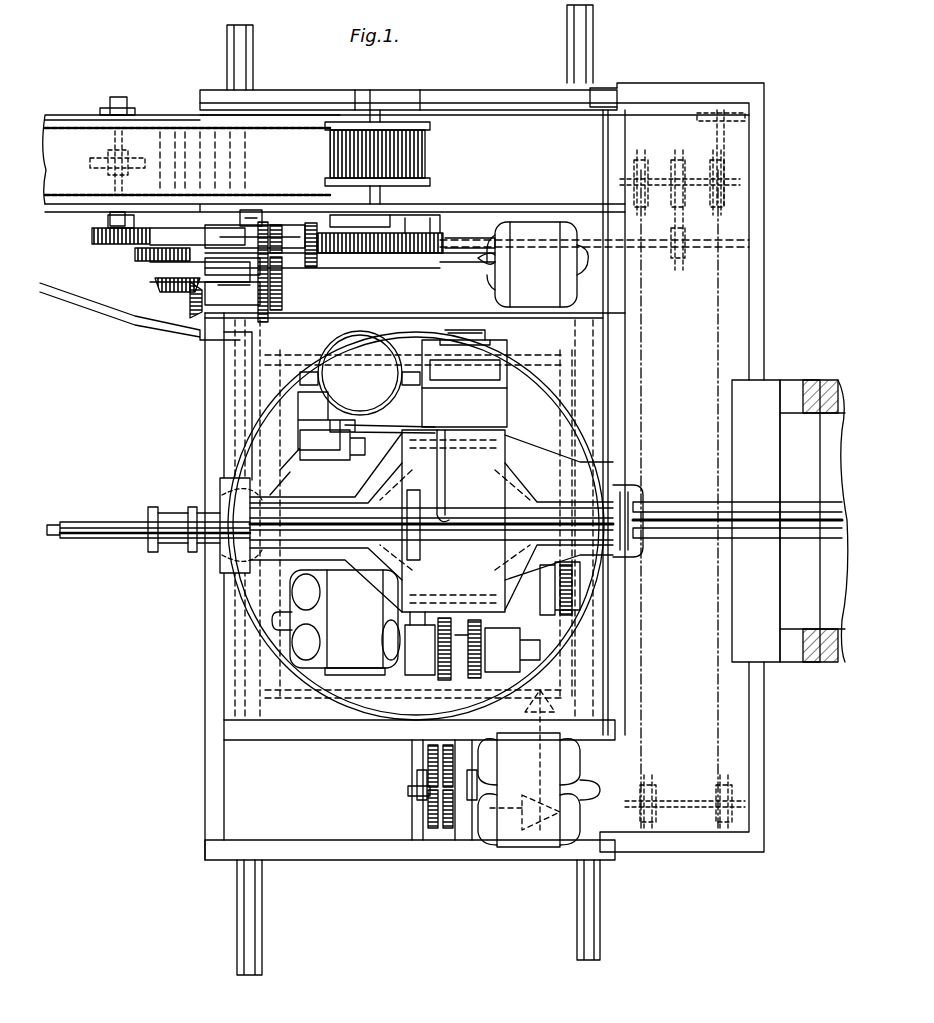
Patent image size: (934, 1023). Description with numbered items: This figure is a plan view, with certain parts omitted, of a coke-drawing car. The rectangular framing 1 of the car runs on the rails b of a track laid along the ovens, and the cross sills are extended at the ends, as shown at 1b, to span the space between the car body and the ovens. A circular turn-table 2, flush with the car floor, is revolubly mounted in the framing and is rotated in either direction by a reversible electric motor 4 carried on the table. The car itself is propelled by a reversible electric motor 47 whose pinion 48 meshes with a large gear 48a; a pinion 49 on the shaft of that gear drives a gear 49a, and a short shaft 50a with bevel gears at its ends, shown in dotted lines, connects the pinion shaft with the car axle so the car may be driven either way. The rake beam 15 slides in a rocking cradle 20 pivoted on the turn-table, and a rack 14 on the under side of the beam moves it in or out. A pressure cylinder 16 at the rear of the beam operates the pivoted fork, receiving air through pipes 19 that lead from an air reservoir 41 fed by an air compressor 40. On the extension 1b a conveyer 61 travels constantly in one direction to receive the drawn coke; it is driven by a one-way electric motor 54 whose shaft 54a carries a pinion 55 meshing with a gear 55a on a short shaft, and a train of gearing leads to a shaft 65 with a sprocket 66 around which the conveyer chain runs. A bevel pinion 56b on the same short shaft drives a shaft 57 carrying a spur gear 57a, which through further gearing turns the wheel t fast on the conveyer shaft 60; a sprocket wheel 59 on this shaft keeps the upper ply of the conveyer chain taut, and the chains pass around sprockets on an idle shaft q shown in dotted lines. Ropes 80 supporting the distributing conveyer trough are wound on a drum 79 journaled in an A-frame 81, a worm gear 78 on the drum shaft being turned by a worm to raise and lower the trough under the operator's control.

The rectangular framing 1 is at (425, 313).
The cross sill extension 1b is at (708, 870).
The rails b is at (255, 915).
The turn-table 2 is at (268, 420).
The reversible electric motor 4 is at (336, 622).
The rack 14 is at (688, 515).
The rake beam 15 is at (665, 538).
The pressure cylinder 16 is at (178, 552).
The air pipes 19 is at (55, 530).
The cradle 20 is at (268, 492).
The air compressor 40 is at (507, 400).
The air reservoir 41 is at (352, 413).
The reversible electric motor 47 is at (530, 820).
The pinion 48 is at (455, 788).
The large gear 48a is at (450, 828).
The pinion 49 is at (425, 796).
The gear 49a is at (435, 828).
The short shaft 50a is at (540, 735).
The one-way electric motor 54 is at (533, 264).
The motor shaft 54a is at (345, 268).
The pinion 55 is at (282, 288).
The gear 55a is at (263, 322).
The bevel pinion 56b is at (190, 318).
The shaft 57 is at (158, 290).
The spur gear 57a is at (160, 262).
The sprocket wheel 59 is at (97, 162).
The conveyer shaft 60 is at (127, 110).
The conveyer 61 is at (718, 712).
The shaft 65 is at (478, 238).
The sprocket 66 is at (684, 258).
The worm gear 78 is at (408, 250).
The drum 79 is at (430, 148).
The ropes 80 is at (272, 193).
The A-frame 81 is at (303, 93).
The idle shaft q is at (717, 140).
The wheel t is at (100, 243).